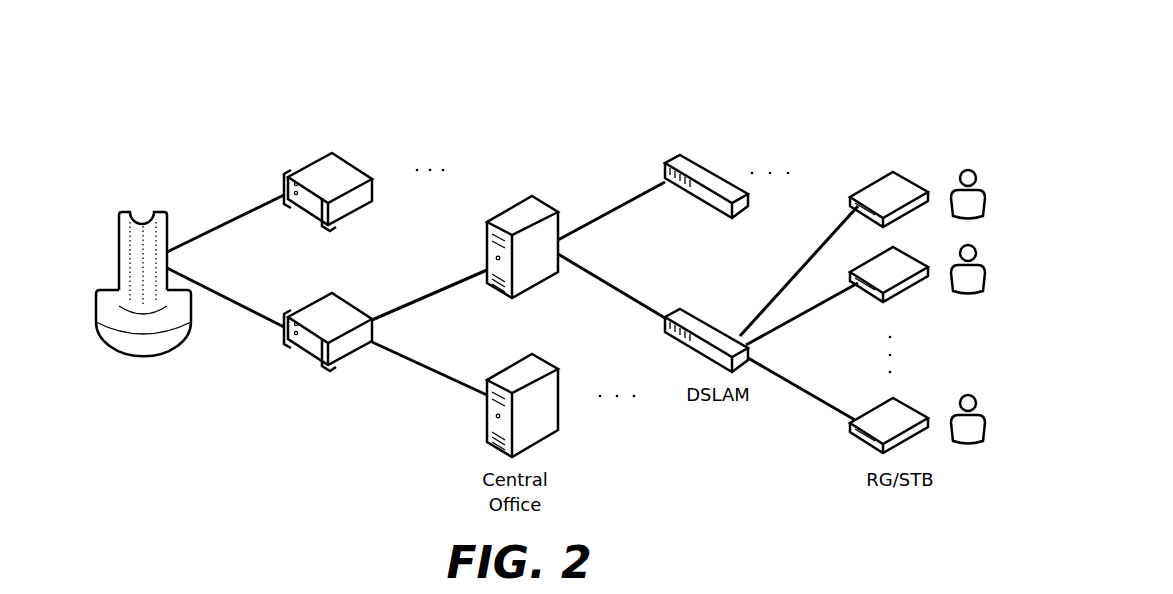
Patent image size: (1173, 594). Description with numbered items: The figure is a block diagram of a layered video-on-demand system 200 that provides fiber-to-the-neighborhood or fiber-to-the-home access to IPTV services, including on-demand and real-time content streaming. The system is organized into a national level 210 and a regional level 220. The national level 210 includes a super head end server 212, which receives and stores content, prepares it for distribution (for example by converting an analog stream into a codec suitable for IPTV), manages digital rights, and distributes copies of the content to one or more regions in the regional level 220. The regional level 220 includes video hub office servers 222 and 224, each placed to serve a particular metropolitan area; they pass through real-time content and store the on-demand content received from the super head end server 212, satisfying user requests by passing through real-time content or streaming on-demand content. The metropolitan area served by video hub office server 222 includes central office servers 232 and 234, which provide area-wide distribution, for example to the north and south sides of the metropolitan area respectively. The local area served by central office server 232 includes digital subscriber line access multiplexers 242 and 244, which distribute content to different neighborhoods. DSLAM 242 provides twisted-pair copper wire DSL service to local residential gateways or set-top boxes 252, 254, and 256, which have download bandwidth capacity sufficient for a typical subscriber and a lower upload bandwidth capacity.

The layered VOD system 200 is at (828, 52).
The national level 210 is at (139, 126).
The super head end server 212 is at (162, 210).
The regional level 220 is at (326, 108).
The video hub office server 222 is at (348, 298).
The video hub office server 224 is at (348, 158).
The central office server 232 is at (547, 204).
The central office server 234 is at (547, 361).
The digital subscriber line access multiplexer 242 is at (690, 308).
The digital subscriber line access multiplexer 244 is at (690, 157).
The residential gateway or set-top box 252 is at (900, 170).
The residential gateway or set-top box 254 is at (900, 245).
The residential gateway or set-top box 256 is at (900, 397).